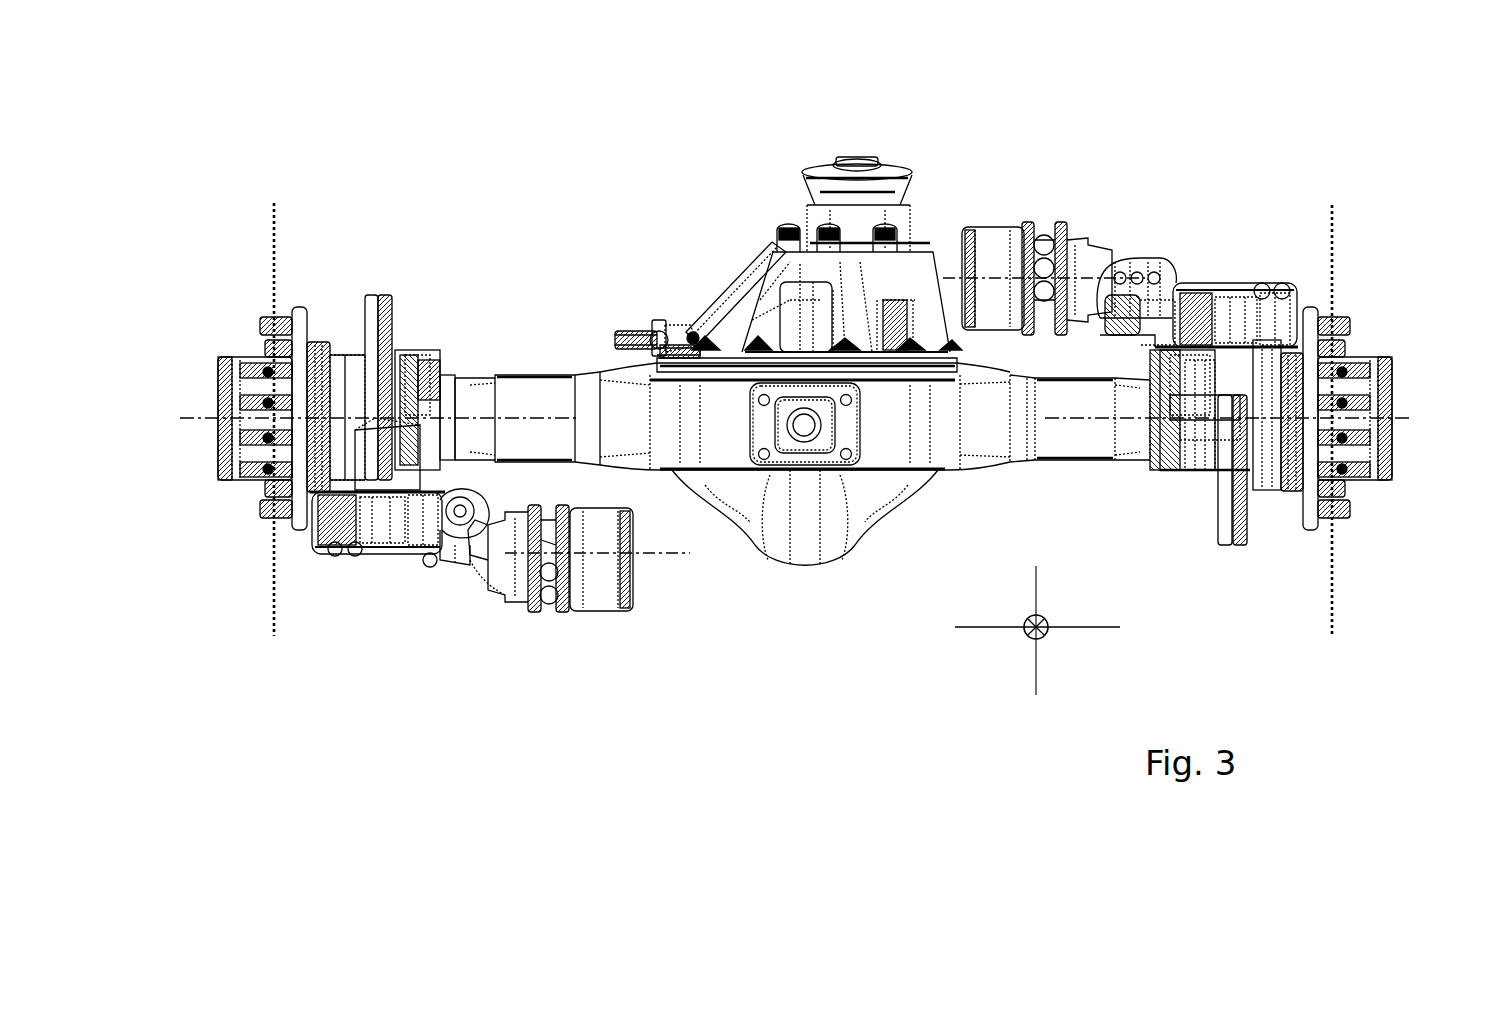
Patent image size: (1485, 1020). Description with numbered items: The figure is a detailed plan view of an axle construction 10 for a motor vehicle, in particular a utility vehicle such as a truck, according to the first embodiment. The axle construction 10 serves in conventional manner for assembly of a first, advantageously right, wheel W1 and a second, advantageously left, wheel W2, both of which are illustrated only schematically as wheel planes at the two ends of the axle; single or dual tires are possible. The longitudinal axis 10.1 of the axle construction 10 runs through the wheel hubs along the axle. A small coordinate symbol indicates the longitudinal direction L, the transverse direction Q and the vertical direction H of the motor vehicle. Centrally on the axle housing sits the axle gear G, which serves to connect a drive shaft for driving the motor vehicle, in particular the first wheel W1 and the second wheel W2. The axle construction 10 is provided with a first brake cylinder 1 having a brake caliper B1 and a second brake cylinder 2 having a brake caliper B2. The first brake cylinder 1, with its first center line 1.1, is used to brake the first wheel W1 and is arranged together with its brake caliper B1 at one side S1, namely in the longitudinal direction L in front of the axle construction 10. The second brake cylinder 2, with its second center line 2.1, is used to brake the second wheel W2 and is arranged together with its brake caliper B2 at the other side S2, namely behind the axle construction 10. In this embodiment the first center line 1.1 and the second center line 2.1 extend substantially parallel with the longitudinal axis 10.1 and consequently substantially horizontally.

The axle construction 10 is at (515, 268).
The longitudinal axis 10.1 is at (182, 415).
The first brake cylinder 1 is at (1003, 240).
The first center line 1.1 is at (944, 275).
The second brake cylinder 2 is at (597, 585).
The second center line 2.1 is at (662, 558).
The brake caliper B1 is at (1231, 343).
The brake caliper B2 is at (382, 495).
The axle gear G is at (735, 277).
The first wheel W1 is at (1330, 213).
The second wheel W2 is at (270, 238).
The one side S1 is at (1097, 121).
The other side S2 is at (530, 714).
The longitudinal direction L is at (1036, 631).
The transverse direction Q is at (1033, 629).
The vertical direction H is at (1044, 616).